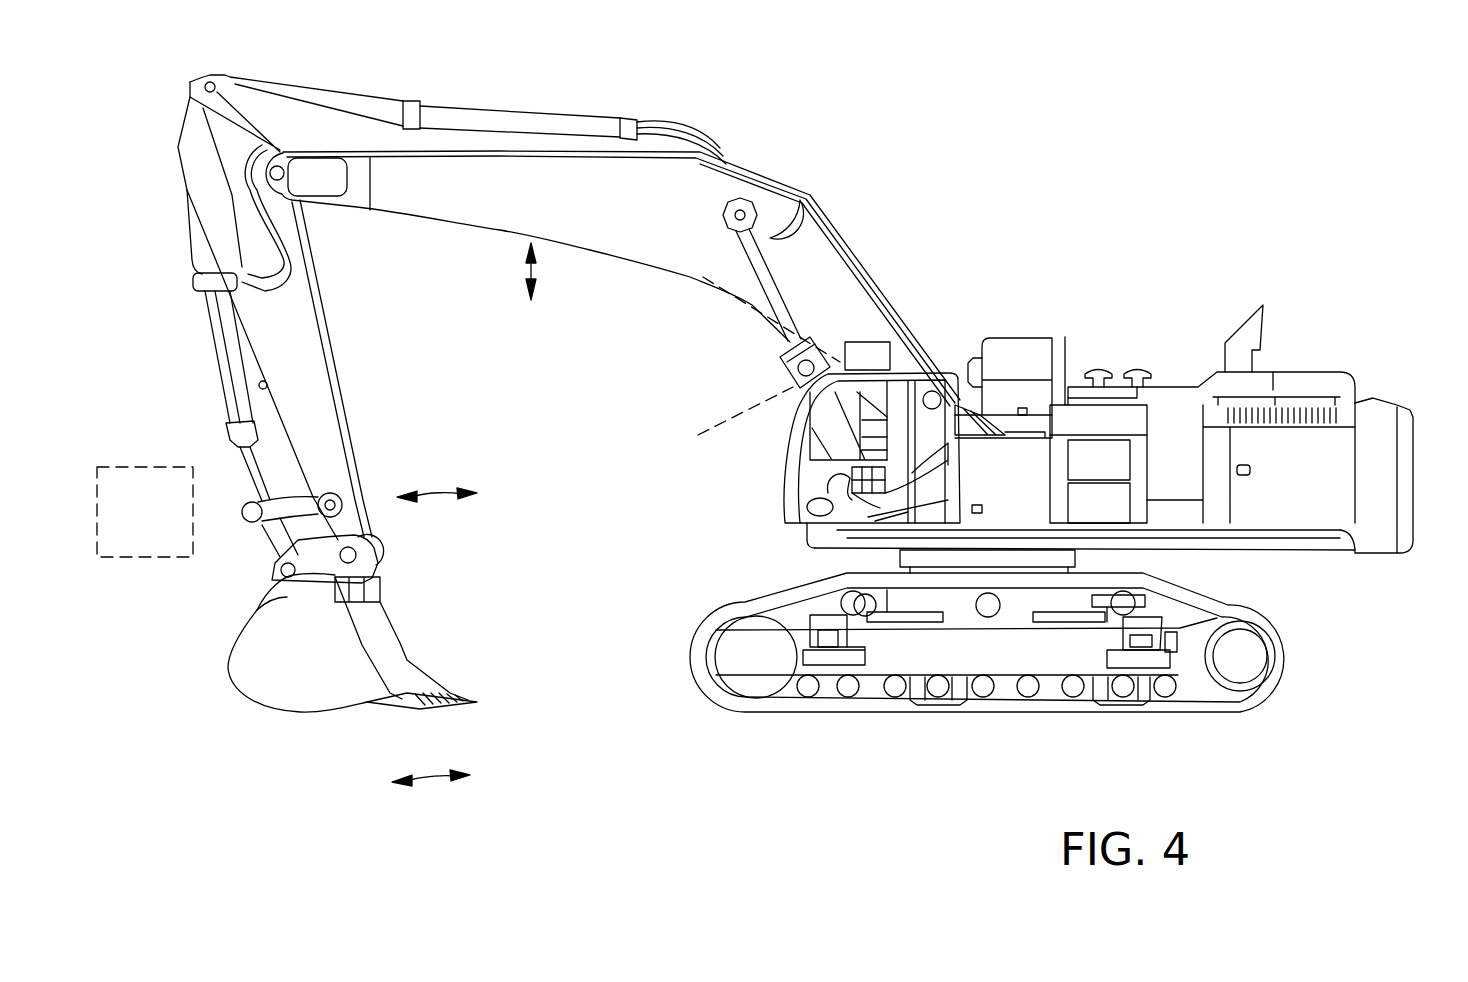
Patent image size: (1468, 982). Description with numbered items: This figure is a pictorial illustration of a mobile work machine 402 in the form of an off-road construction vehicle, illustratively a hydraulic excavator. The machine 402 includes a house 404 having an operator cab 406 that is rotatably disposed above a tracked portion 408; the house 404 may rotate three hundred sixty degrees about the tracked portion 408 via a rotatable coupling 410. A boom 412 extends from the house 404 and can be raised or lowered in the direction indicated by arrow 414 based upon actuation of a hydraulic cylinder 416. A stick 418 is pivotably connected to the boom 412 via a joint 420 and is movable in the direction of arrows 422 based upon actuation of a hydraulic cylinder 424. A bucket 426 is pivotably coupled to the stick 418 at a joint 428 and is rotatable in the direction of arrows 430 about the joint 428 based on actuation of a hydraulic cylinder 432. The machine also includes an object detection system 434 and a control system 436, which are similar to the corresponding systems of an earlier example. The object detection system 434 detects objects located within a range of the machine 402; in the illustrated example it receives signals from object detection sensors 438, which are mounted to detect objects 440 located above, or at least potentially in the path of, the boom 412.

The mobile work machine 402 is at (1303, 213).
The house 404 is at (1312, 372).
The operator cab 406 is at (785, 492).
The tracked portion 408 is at (1293, 655).
The rotatable coupling 410 is at (900, 557).
The boom 412 is at (838, 228).
The arrow 414 is at (535, 270).
The hydraulic cylinder 416 is at (788, 362).
The stick 418 is at (340, 370).
The joint 420 is at (280, 168).
The arrows 422 is at (423, 497).
The hydraulic cylinder 424 is at (528, 110).
The bucket 426 is at (232, 632).
The joint 428 is at (348, 555).
The arrows 430 is at (428, 780).
The hydraulic cylinder 432 is at (225, 405).
The object detection system 434 is at (1099, 460).
The control system 436 is at (1099, 503).
The object detection sensor 438 is at (870, 350).
The objects 440 is at (112, 467).